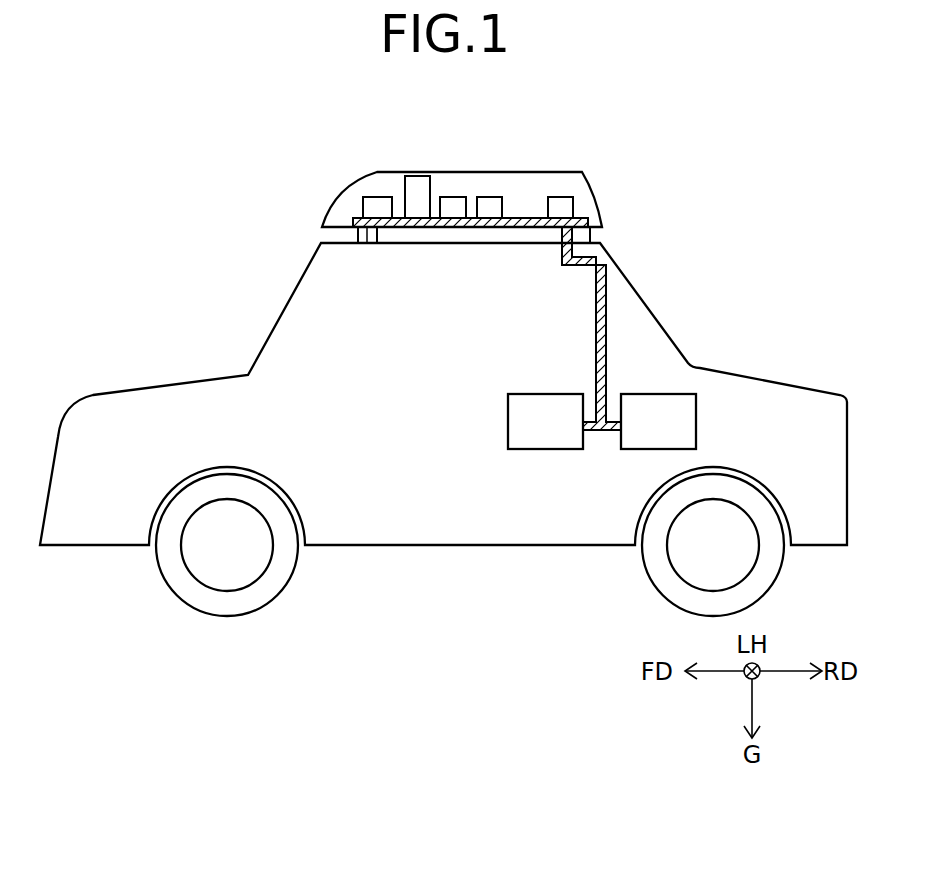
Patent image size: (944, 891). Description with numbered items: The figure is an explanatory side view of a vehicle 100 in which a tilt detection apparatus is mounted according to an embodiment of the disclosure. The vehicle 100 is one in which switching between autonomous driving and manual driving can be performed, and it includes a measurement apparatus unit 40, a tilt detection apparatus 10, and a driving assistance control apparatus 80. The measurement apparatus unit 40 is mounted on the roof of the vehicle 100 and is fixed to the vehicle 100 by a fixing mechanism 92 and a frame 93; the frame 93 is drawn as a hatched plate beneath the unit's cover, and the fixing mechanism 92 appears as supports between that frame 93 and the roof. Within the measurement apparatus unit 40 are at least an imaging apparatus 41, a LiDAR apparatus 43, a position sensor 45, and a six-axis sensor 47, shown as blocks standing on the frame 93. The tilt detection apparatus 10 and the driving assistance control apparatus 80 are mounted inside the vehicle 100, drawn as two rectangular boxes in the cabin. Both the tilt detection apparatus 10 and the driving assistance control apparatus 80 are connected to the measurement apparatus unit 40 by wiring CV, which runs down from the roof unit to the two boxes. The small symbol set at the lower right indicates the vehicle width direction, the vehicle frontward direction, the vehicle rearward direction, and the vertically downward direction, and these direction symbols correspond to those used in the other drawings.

The vehicle 100 is at (133, 389).
The measurement apparatus unit 40 is at (533, 170).
The frame 93 is at (588, 221).
The imaging apparatus 41 is at (370, 208).
The LiDAR apparatus 43 is at (417, 200).
The position sensor 45 is at (455, 205).
The six-axis sensor 47 is at (488, 205).
The fixing mechanism 92 is at (360, 237).
The wiring CV is at (597, 333).
The tilt detection apparatus 10 is at (518, 450).
The driving assistance control apparatus 80 is at (637, 450).